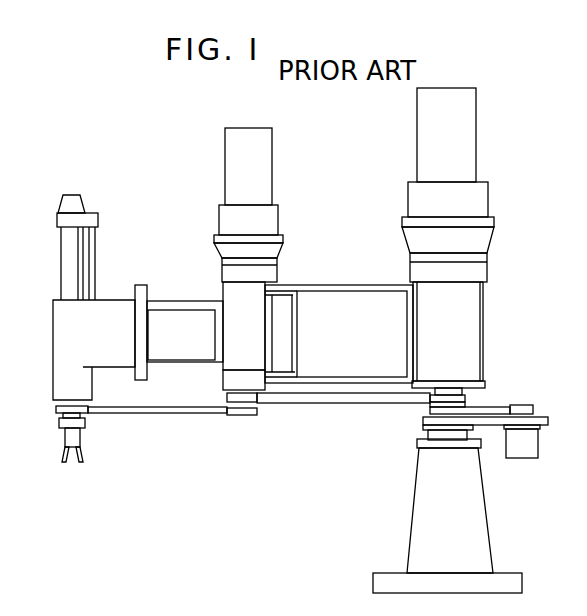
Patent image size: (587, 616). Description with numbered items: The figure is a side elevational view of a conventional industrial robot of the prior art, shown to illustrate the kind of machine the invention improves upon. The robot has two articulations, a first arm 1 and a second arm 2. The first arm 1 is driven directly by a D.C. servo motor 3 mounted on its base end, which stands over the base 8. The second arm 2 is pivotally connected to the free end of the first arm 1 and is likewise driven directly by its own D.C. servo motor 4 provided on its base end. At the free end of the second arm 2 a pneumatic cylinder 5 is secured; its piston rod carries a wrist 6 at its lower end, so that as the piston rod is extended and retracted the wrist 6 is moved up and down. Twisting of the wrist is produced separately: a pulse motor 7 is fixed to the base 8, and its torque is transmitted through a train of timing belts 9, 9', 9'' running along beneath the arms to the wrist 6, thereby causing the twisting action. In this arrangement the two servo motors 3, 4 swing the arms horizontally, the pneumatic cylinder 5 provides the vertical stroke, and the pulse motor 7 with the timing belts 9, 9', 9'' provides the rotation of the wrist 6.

The first arm 1 is at (345, 300).
The second arm 2 is at (172, 306).
The D.C. servo motor 3 is at (419, 143).
The D.C. servo motor 4 is at (225, 175).
The pneumatic cylinder 5 is at (61, 268).
The wrist 6 is at (80, 440).
The pulse motor 7 is at (522, 458).
The base 8 is at (415, 508).
The timing belt 9 is at (485, 403).
The timing belt 9' is at (343, 422).
The timing belt 9'' is at (157, 437).